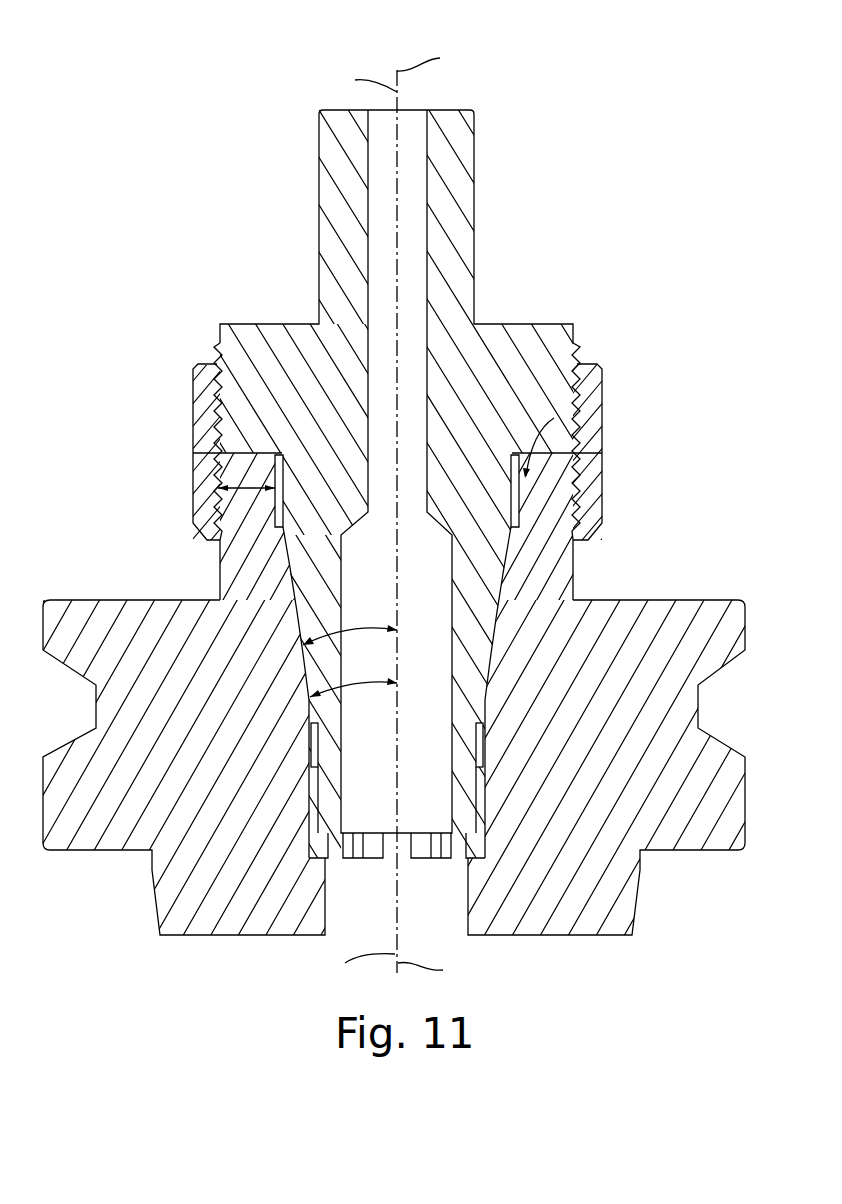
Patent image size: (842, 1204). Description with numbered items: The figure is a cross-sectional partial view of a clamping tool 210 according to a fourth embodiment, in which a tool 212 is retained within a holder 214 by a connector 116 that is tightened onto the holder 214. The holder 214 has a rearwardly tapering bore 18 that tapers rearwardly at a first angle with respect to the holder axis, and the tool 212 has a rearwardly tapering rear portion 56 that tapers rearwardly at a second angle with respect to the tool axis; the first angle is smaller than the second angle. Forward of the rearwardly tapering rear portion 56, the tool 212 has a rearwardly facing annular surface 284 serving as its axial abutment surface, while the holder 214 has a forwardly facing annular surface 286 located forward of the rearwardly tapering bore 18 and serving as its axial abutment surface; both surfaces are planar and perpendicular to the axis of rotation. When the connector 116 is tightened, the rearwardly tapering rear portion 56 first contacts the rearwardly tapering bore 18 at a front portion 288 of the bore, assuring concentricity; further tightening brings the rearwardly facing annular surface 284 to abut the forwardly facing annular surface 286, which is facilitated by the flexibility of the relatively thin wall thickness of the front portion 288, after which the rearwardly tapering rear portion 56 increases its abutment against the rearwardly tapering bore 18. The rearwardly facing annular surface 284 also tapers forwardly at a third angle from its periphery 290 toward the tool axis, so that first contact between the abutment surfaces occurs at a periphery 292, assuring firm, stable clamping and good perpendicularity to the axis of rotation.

The clamping tool 210 is at (421, 554).
The tool 212 is at (451, 486).
The holder 214 is at (421, 707).
The connector 116 is at (598, 388).
The forwardly facing annular surface 286 is at (251, 450).
The periphery 290 is at (217, 452).
The front portion 288 is at (290, 528).
The periphery 292 is at (580, 450).
The rearwardly facing annular surface 284 is at (552, 456).
The rearwardly tapering bore 18 is at (297, 592).
The rearwardly tapering rear portion 56 is at (514, 562).